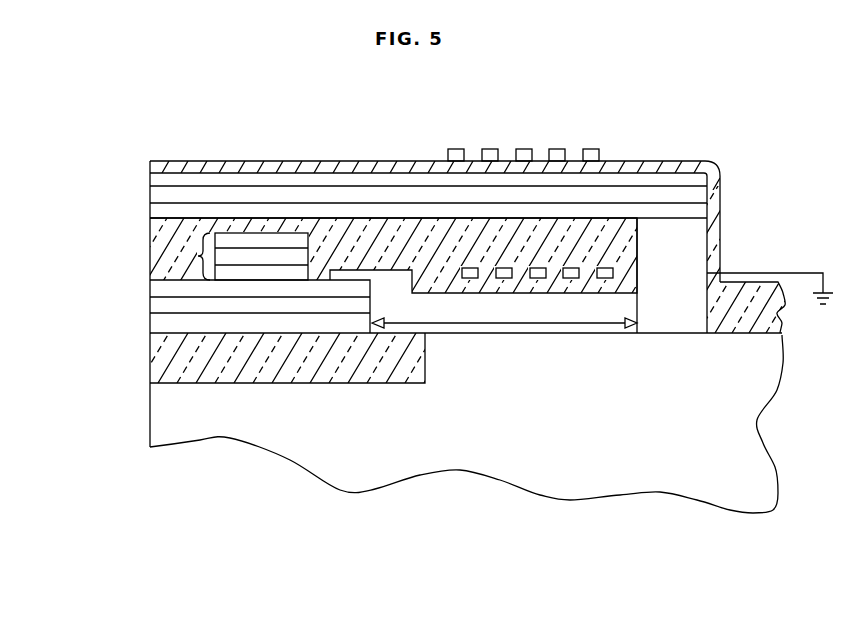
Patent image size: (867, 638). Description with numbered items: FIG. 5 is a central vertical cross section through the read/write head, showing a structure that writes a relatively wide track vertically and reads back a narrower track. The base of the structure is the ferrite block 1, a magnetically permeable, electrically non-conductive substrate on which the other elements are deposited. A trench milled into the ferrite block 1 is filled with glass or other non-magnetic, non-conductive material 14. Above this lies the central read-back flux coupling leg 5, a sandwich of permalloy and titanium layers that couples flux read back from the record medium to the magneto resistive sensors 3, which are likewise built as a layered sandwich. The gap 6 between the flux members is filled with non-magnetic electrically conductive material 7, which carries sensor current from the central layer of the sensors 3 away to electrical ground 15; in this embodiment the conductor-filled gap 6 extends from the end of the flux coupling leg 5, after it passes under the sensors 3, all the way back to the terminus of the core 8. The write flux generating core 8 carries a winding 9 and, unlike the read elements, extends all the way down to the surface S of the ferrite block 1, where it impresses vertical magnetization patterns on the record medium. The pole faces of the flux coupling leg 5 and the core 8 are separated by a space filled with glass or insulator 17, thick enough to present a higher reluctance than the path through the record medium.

The ferrite block 1 is at (763, 447).
The surface of the ferrite block S is at (158, 420).
The magneto resistive sensor 3 is at (193, 255).
The flux coupling leg 5 is at (147, 280).
The gap 6 is at (452, 324).
The non-magnetic electrically conductive material 7 is at (565, 308).
The write flux generating core 8 is at (147, 173).
The winding 9 is at (587, 148).
The non-magnetic non-conductive material 14 is at (162, 358).
The electrical ground 15 is at (802, 273).
The glass or insulator 17 is at (140, 258).